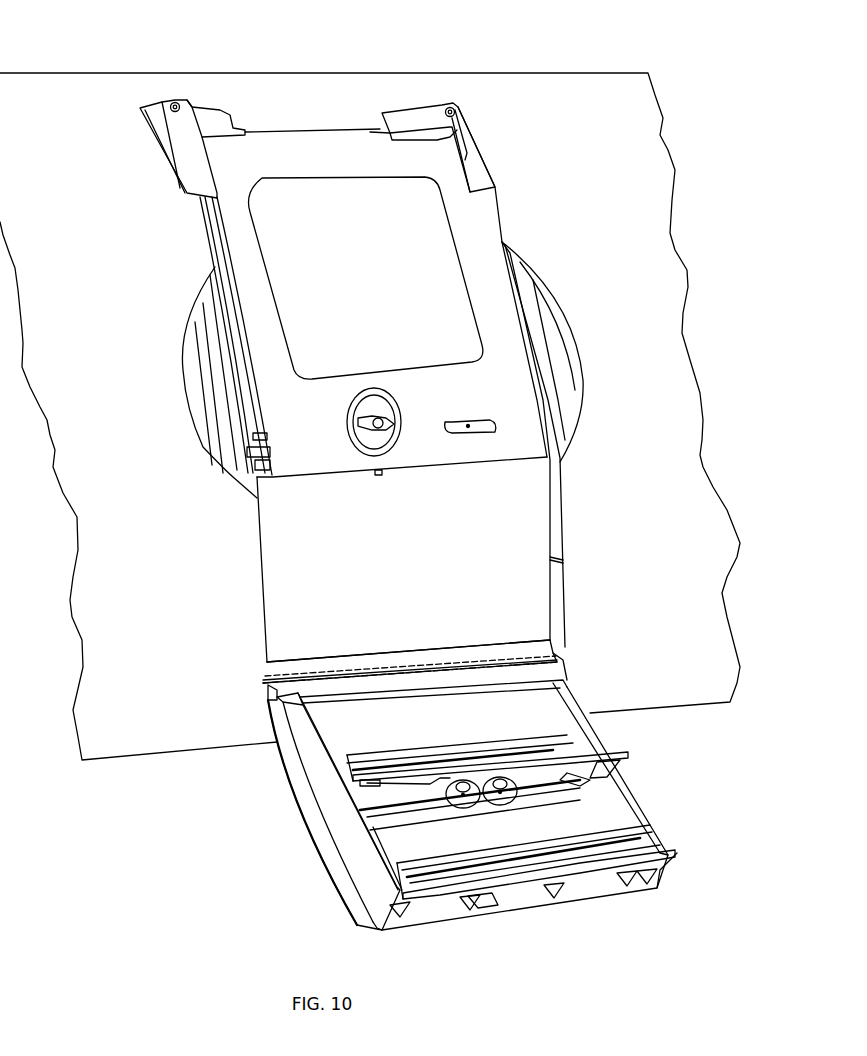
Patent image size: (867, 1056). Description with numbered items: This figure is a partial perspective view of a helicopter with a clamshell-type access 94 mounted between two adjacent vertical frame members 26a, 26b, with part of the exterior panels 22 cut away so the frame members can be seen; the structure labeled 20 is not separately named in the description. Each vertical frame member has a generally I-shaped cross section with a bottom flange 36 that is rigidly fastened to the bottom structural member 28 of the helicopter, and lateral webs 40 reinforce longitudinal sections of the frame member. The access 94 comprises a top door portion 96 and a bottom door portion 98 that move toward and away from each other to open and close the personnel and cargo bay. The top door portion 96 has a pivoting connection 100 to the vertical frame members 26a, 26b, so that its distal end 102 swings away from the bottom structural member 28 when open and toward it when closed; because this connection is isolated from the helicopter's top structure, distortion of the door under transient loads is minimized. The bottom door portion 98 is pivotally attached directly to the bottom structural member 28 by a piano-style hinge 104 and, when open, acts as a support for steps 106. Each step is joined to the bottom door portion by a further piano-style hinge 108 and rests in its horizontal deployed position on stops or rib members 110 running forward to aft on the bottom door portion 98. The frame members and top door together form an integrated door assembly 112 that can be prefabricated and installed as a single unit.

The door frame 20 is at (623, 504).
The exterior panels 22 is at (582, 232).
The vertical frame member 26a is at (207, 373).
The vertical frame member 26b is at (553, 348).
The bottom structural member 28 is at (487, 642).
The bottom flange 36 is at (556, 645).
The lateral webs 40 is at (562, 562).
The access 94 is at (370, 264).
The top door portion 96 is at (358, 282).
The bottom door portion 98 is at (514, 823).
The pivoting connection 100 is at (178, 100).
The distal end 102 is at (425, 470).
The piano-style hinge 104 is at (420, 665).
The steps 106 is at (628, 752).
The piano-style hinge 108 is at (557, 748).
The stops or rib members 110 is at (603, 770).
The integrated door assembly 112 is at (375, 109).